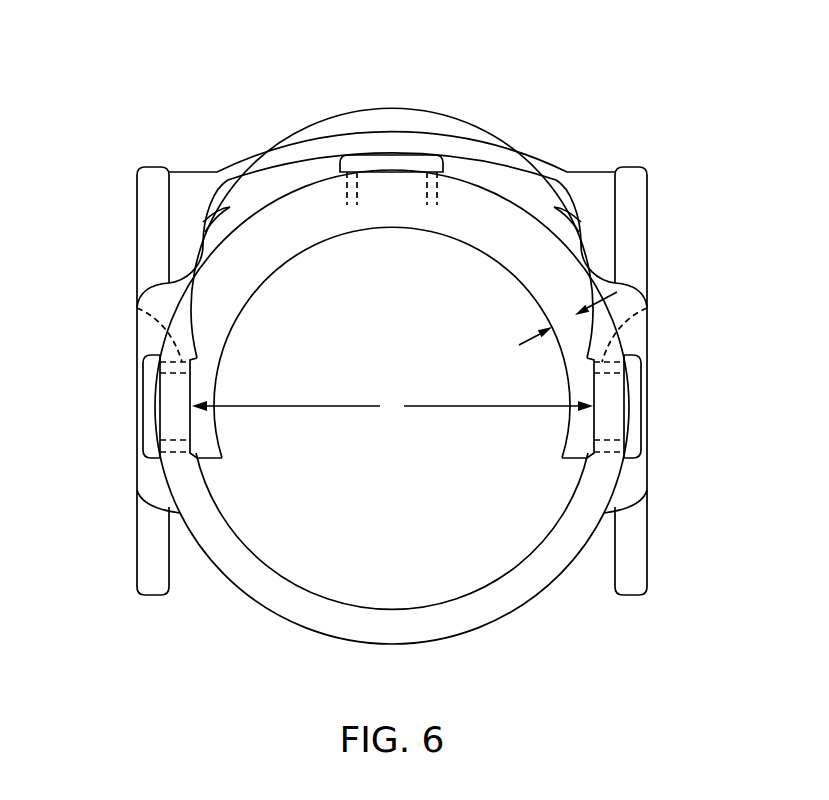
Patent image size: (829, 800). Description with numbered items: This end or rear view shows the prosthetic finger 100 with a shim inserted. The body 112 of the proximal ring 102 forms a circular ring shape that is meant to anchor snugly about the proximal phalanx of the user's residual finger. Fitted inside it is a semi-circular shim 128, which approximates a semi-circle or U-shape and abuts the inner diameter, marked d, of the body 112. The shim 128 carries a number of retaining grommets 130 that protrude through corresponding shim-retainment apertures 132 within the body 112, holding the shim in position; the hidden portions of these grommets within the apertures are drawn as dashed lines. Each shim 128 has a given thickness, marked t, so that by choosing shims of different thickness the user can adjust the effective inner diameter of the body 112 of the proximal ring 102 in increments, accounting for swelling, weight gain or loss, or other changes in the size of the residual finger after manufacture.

The prosthetic finger 100 is at (384, 339).
The proximal ring 102 is at (83, 365).
The body 112 is at (542, 568).
The shim 128 is at (537, 280).
The retaining grommets 130 is at (397, 160).
The shim-retainment apertures 132 is at (137, 310).